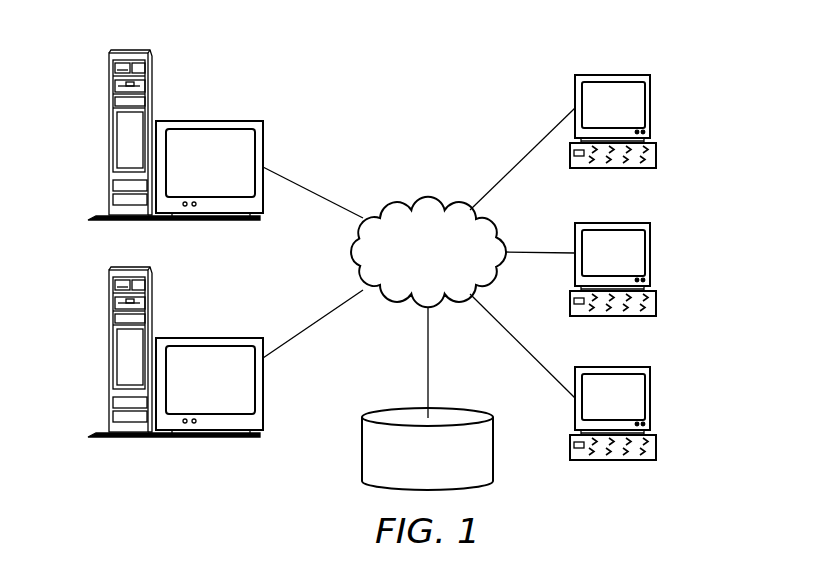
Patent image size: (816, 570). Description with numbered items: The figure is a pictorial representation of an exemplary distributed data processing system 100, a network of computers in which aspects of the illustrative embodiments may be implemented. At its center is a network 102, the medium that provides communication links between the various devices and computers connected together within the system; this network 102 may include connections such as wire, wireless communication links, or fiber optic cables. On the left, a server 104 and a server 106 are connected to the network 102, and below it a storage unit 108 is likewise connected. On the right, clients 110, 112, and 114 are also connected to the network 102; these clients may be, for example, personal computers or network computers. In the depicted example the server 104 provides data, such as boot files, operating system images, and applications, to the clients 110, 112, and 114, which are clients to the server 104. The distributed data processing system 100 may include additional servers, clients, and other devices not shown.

The distributed data processing system 100 is at (482, 64).
The network 102 is at (399, 201).
The server 104 is at (108, 137).
The server 106 is at (108, 355).
The storage unit 108 is at (362, 450).
The client 110 is at (650, 106).
The client 112 is at (650, 253).
The client 114 is at (650, 399).